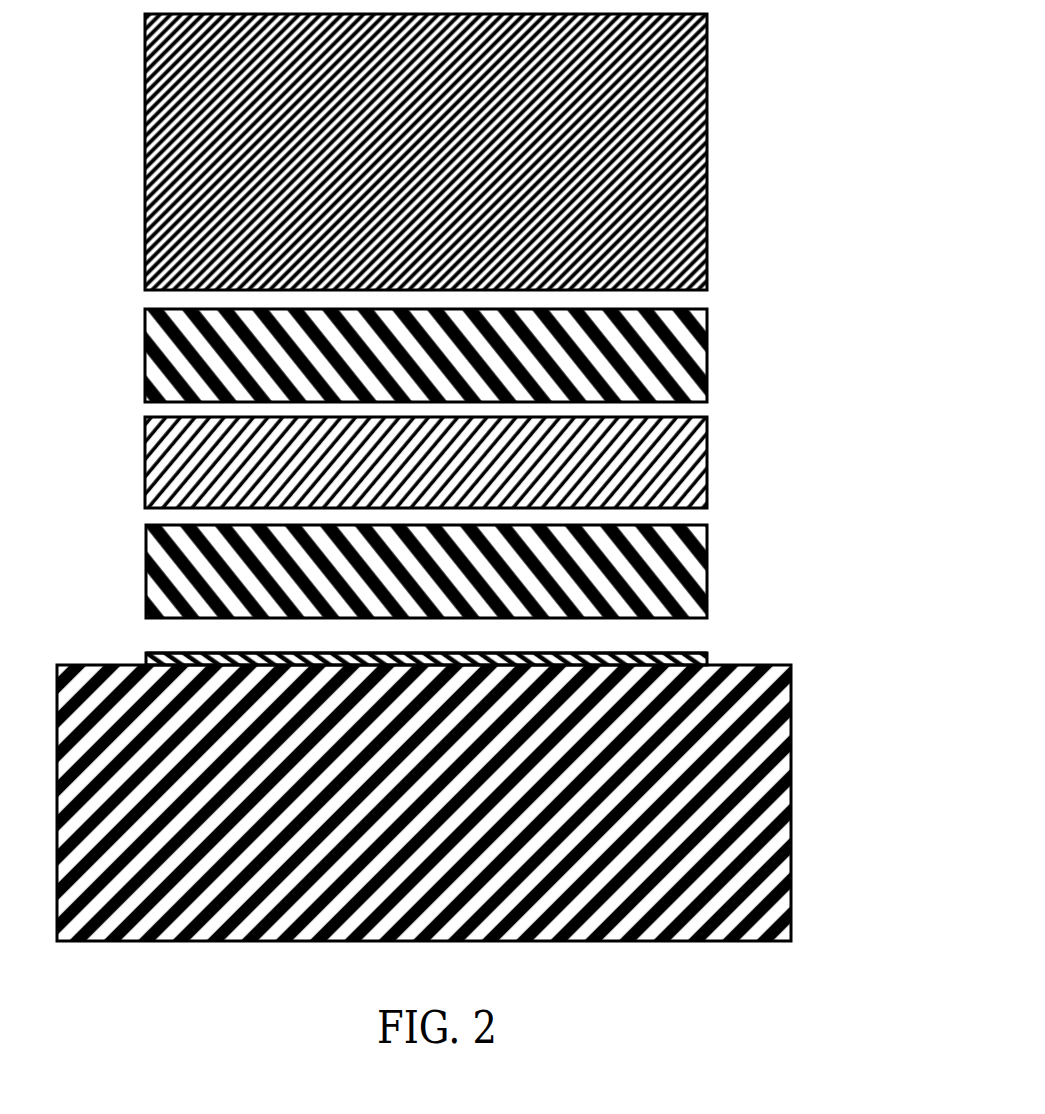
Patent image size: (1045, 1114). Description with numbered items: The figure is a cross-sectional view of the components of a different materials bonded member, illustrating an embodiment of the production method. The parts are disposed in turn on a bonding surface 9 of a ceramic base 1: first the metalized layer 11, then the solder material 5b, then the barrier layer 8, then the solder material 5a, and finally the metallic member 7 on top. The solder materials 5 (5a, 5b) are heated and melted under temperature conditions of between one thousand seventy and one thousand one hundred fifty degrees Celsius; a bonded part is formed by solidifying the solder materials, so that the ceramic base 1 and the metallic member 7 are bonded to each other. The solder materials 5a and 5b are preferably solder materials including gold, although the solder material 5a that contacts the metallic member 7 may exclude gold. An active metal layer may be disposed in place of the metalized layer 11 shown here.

The ceramic base 1 is at (735, 772).
The solder material 5 is at (542, 463).
The solder material 5a is at (647, 364).
The solder material 5b is at (690, 560).
The metallic member 7 is at (683, 171).
The barrier layer 8 is at (163, 470).
The bonding surface 9 is at (173, 653).
The metalized layer 11 is at (678, 652).